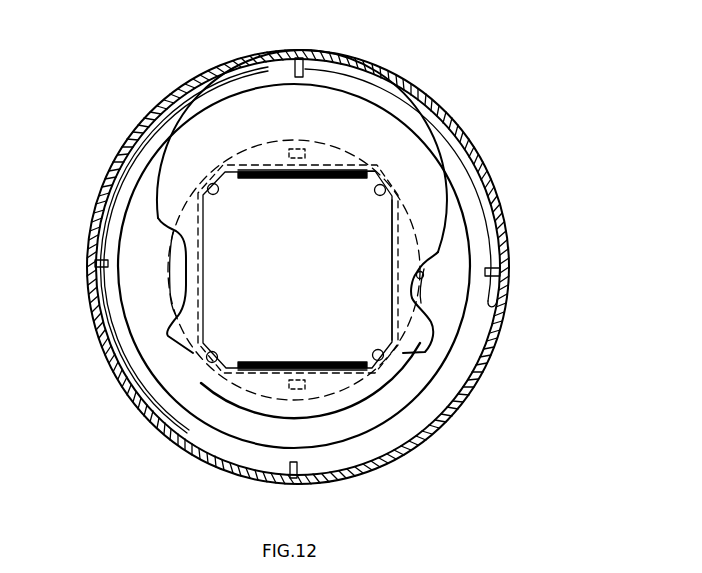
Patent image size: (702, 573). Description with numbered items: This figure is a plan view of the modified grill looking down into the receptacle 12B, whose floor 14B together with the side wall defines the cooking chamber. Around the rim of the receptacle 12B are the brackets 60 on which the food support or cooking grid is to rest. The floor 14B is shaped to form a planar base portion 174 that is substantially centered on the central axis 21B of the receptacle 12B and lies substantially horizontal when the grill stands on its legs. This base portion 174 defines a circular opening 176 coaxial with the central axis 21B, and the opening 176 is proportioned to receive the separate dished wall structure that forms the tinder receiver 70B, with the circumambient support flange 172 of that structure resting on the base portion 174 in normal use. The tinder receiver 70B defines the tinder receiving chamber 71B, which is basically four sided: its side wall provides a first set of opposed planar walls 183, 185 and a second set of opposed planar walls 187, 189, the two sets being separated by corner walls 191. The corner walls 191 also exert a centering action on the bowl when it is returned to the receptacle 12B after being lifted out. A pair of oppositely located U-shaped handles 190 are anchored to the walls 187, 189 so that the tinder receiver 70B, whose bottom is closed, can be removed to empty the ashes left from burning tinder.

The receptacle 12B is at (176, 82).
The brackets 60 is at (330, 62).
The handles 190 is at (345, 168).
The tinder receiver 70B is at (427, 118).
The corner walls 191 is at (211, 184).
The tinder receiving chamber 71B is at (365, 230).
The support flange 172 is at (415, 243).
The circular opening 176 is at (424, 277).
The planar base portion 174 is at (152, 303).
The planar wall 189 is at (234, 180).
The planar wall 187 is at (238, 360).
The planar wall 183 is at (205, 262).
The planar wall 185 is at (391, 310).
The central axis 21B is at (301, 258).
The floor 14B is at (410, 395).